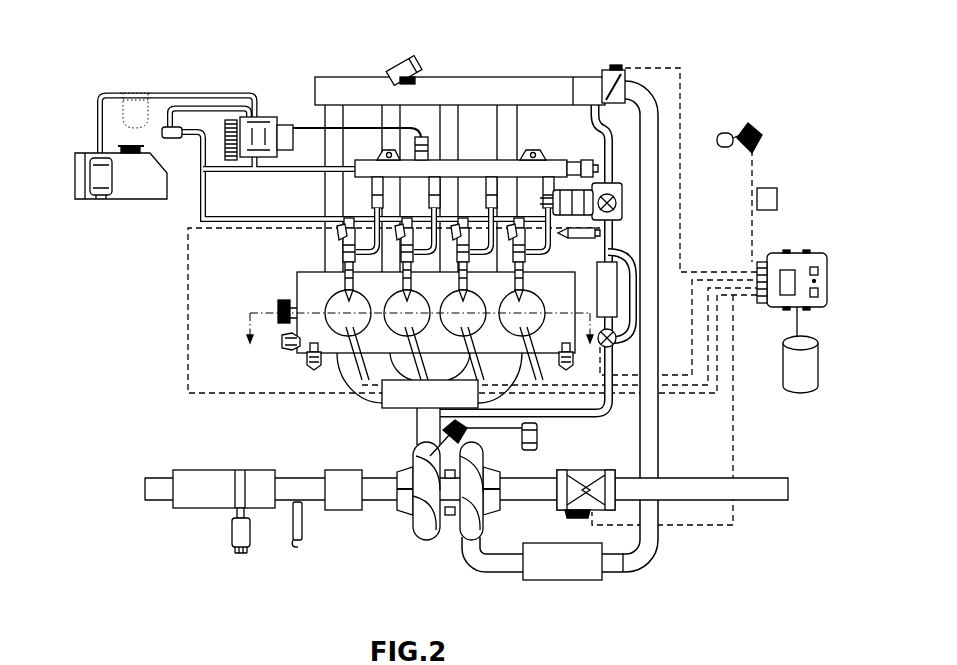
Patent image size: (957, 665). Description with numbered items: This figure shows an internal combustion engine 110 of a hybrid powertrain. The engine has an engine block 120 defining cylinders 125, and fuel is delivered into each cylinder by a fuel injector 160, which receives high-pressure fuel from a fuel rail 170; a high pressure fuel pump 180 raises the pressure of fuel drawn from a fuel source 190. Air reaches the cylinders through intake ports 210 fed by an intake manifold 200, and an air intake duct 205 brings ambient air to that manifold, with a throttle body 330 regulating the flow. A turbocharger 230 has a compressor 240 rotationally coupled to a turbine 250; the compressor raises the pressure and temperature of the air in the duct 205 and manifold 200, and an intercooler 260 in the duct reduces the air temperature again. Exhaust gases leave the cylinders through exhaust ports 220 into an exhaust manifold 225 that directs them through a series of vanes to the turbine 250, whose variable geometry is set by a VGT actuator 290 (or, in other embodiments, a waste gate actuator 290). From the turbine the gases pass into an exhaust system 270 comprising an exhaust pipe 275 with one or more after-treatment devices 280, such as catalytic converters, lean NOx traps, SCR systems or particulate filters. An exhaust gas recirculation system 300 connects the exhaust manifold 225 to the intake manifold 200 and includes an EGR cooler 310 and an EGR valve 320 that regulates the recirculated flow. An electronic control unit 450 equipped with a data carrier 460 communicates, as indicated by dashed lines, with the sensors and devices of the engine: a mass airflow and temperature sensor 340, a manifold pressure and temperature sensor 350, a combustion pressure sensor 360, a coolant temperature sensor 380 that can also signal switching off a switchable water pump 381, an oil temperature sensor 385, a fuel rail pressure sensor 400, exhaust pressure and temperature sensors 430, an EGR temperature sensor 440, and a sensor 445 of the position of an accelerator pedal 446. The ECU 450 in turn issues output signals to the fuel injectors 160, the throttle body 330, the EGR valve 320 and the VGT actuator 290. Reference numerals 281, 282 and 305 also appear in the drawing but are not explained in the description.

The internal combustion engine 110 is at (530, 66).
The engine block 120 is at (300, 278).
The cylinder 125 is at (540, 294).
The fuel injector 160 is at (340, 255).
The fuel rail 170 is at (350, 170).
The high pressure fuel pump 180 is at (268, 118).
The fuel source 190 is at (140, 184).
The intake manifold 200 is at (452, 88).
The air intake duct 205 is at (652, 453).
The intake port 210 is at (327, 274).
The exhaust port 220 is at (338, 366).
The exhaust manifold 225 is at (345, 480).
The turbocharger 230 is at (435, 518).
The compressor 240 is at (473, 515).
The turbine 250 is at (423, 510).
The intercooler 260 is at (583, 568).
The exhaust system 270 is at (198, 480).
The exhaust pipe 275 is at (157, 492).
The exhaust after-treatment device 280 is at (260, 488).
The intake air sensor 281 is at (342, 497).
The air cleaner housing 282 is at (198, 490).
The VGT actuator 290 is at (468, 432).
The exhaust gas recirculation system 300 is at (582, 423).
The EGR pipe 305 is at (600, 420).
The EGR cooler 310 is at (615, 315).
The EGR valve 320 is at (618, 182).
The throttle body 330 is at (614, 66).
The mass airflow and temperature sensor 340 is at (577, 513).
The manifold pressure and temperature sensor 350 is at (400, 62).
The combustion pressure sensor 360 is at (407, 405).
The coolant temperature sensor 380 is at (278, 348).
The switchable water pump 381 is at (770, 188).
The oil temperature sensor 385 is at (307, 360).
The fuel rail pressure sensor 400 is at (596, 166).
The exhaust pressure and temperature sensor 430 is at (293, 547).
The EGR temperature sensor 440 is at (622, 221).
The accelerator pedal position sensor 445 is at (758, 126).
The accelerator pedal 446 is at (733, 132).
The electronic control unit 450 is at (797, 253).
The data carrier 460 is at (798, 382).